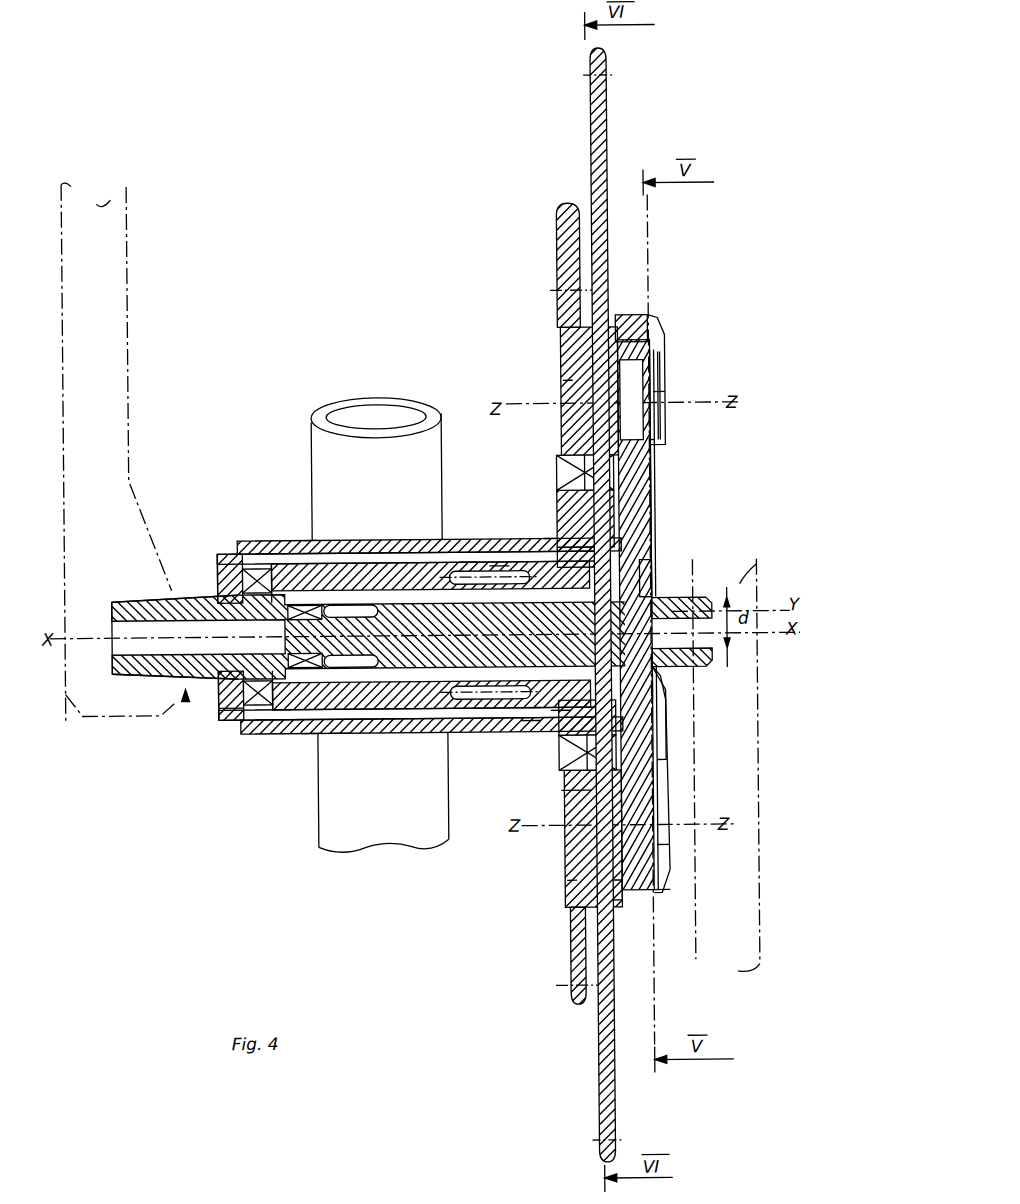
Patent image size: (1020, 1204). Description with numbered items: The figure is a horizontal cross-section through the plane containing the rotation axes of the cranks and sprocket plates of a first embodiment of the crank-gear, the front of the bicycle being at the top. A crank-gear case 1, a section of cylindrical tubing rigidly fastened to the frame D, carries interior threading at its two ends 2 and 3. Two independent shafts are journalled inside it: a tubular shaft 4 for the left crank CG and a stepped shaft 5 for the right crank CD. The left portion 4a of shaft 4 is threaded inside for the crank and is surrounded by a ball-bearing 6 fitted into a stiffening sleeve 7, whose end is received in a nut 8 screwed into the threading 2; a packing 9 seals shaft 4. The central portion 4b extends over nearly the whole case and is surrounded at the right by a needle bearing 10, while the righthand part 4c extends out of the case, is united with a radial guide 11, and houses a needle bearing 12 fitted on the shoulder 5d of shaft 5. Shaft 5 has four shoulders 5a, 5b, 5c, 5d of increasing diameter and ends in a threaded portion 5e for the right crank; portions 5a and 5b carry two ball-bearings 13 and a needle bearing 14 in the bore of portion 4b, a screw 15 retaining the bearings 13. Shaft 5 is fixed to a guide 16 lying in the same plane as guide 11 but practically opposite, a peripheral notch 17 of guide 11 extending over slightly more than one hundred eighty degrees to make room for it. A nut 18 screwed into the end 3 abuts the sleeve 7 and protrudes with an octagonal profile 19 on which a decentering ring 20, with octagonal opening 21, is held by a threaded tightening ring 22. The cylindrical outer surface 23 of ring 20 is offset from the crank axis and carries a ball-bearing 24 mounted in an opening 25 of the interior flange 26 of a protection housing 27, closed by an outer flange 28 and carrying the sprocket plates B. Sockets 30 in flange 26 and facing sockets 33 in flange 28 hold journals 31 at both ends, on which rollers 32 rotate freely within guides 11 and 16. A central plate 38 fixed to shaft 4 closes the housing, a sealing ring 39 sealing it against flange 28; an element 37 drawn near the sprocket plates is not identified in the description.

The crank-gear case 1 is at (250, 732).
The threaded end 2 is at (232, 722).
The threaded end 3 is at (560, 548).
The shaft 4 is at (185, 690).
The left portion of shaft 4 4a is at (200, 597).
The central portion of shaft 4 4b is at (378, 574).
The righthand part of shaft 4 4c is at (495, 565).
The shaft 5 is at (702, 598).
The shoulder 5a is at (312, 539).
The shoulder 5b is at (300, 732).
The shoulder 5c is at (340, 732).
The shoulder 5d is at (520, 722).
The threaded portion 5e is at (712, 667).
The ball-bearing 6 is at (243, 566).
The stiffening sleeve 7 is at (274, 563).
The nut 8 is at (222, 552).
The packing 9 is at (220, 706).
The needle bearing 10 is at (465, 561).
The guide 11 is at (656, 457).
The needle bearing 12 is at (530, 707).
The ball-bearings 13 is at (275, 732).
The needle bearing 14 is at (338, 602).
The screw 15 is at (286, 634).
The guide 16 is at (662, 882).
The peripheral notch 17 is at (652, 540).
The nut 18 is at (460, 732).
The polygonal outer profile 19 is at (558, 470).
The decentering ring 20 is at (655, 492).
The octagonal opening 21 is at (655, 592).
The threaded tightening ring 22 is at (652, 566).
The outer peripheral surface 23 is at (585, 455).
The ball-bearing 24 is at (562, 768).
The opening 25 is at (660, 467).
The interior flange 26 is at (575, 792).
The protection housing 27 is at (563, 345).
The outer flange 28 is at (652, 332).
The sockets 30 is at (565, 382).
The journals 31 is at (666, 347).
The rollers 32 is at (662, 377).
The sockets 33 is at (667, 397).
The clamping ring 37 is at (561, 266).
The central plate 38 is at (665, 747).
The sealing ring 39 is at (660, 716).
The sprocket plates B is at (595, 162).
The frame D is at (330, 446).
The left crank CG is at (108, 280).
The right crank CD is at (742, 872).